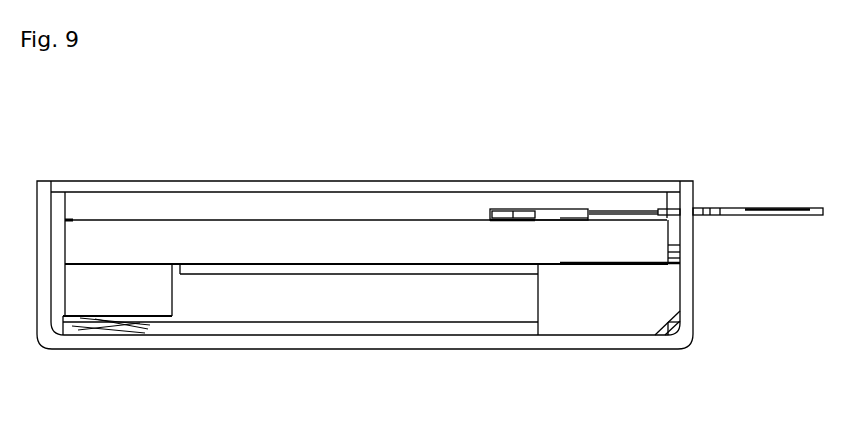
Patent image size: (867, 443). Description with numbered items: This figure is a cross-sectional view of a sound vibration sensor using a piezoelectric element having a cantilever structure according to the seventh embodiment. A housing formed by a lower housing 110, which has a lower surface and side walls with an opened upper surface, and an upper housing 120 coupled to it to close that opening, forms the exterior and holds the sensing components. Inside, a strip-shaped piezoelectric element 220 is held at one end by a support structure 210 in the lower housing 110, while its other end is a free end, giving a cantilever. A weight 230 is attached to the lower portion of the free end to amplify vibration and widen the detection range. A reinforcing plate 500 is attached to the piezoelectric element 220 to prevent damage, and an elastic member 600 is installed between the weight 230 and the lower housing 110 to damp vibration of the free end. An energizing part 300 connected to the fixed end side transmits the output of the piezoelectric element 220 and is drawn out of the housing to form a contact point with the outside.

The lower housing 110 is at (470, 341).
The upper housing 120 is at (543, 187).
The support structure 210 is at (593, 322).
The piezoelectric element 220 is at (254, 252).
The weight 230 is at (163, 294).
The energizing part 300 is at (756, 208).
The reinforcing plate 500 is at (345, 272).
The elastic member 600 is at (107, 328).